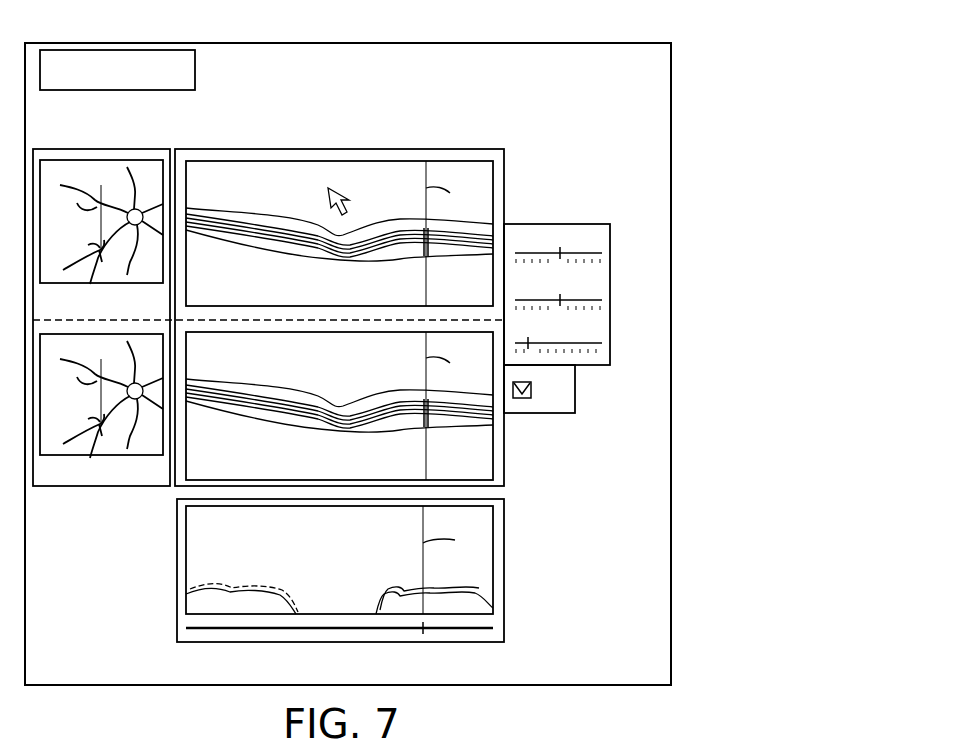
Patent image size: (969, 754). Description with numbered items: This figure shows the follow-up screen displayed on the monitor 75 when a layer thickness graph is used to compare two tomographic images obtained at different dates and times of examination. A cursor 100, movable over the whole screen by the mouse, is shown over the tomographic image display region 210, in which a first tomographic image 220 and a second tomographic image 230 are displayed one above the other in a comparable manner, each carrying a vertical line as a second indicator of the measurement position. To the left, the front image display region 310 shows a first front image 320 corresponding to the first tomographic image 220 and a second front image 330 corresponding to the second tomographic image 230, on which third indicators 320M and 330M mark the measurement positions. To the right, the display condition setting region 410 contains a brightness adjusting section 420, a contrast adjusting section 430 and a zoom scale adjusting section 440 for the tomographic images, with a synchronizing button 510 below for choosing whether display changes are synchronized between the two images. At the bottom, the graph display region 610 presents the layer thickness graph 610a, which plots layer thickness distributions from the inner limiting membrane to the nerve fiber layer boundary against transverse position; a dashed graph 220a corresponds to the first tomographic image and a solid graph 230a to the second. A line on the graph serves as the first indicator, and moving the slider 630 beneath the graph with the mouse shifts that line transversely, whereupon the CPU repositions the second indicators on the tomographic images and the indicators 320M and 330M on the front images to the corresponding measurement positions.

The monitor 75 is at (602, 43).
The front image display region 310 is at (147, 149).
The first front image 320 is at (118, 160).
The third indicator 320M is at (90, 270).
The second front image 330 is at (72, 457).
The third indicator 330M is at (92, 433).
The tomographic image display region 210 is at (505, 155).
The first tomographic image 220 is at (400, 160).
The second tomographic image 230 is at (493, 452).
The cursor 100 is at (340, 195).
The display condition setting region 410 is at (552, 224).
The brightness adjusting section 420 is at (598, 249).
The contrast adjusting section 430 is at (598, 298).
The zoom scale adjusting section 440 is at (598, 342).
The synchronizing button 510 is at (540, 413).
The graph display region 610 is at (504, 527).
The layer thickness graph 610a is at (215, 565).
The graph 220a is at (480, 588).
The graph 230a is at (493, 604).
The slider 630 is at (424, 632).